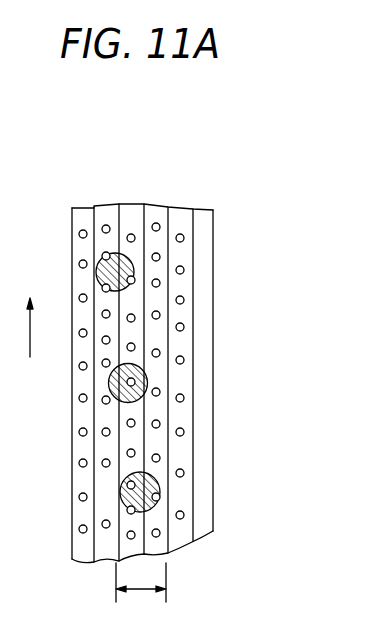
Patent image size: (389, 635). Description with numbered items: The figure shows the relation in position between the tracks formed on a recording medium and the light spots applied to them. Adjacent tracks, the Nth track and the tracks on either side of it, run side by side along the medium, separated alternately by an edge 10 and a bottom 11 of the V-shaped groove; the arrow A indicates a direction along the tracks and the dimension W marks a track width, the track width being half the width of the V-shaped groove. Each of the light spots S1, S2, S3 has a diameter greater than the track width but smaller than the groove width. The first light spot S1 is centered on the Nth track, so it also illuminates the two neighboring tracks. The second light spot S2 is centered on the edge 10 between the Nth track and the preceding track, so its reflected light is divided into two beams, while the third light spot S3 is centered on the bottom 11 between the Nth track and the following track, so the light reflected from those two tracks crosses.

The edge 10 is at (142, 216).
The bottom 11 is at (123, 212).
The first light spot S1 is at (147, 377).
The second light spot S2 is at (160, 488).
The third light spot S3 is at (97, 263).
The tape running direction A is at (31, 338).
The track width W is at (141, 582).